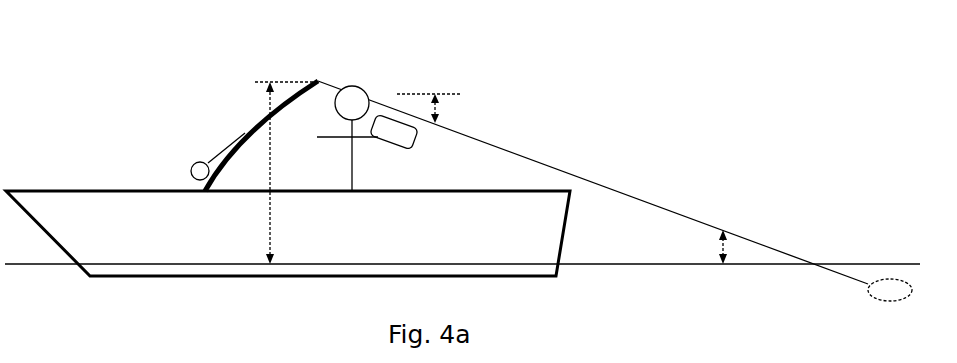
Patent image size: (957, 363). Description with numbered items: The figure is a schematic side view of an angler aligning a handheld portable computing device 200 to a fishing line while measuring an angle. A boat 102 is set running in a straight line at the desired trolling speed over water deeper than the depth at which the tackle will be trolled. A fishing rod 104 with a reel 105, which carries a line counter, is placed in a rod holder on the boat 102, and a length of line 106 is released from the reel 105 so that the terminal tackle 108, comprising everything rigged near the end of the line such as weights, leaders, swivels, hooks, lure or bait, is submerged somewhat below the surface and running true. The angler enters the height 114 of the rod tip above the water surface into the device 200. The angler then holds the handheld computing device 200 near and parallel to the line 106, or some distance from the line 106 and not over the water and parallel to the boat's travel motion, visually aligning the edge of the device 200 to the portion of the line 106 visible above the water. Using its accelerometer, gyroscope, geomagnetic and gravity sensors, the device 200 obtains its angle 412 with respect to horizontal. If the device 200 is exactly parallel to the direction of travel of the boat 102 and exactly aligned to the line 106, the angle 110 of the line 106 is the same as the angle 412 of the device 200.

The boat 102 is at (115, 183).
The fishing rod 104 is at (231, 134).
The reel 105 is at (192, 165).
The line 106 is at (331, 83).
The terminal tackle 108 is at (880, 276).
The angle of the line 110 is at (752, 250).
The height above the water surface of the rod tip 114 is at (273, 76).
The handheld portable computing device 200 is at (422, 150).
The angle of the device 412 is at (457, 110).